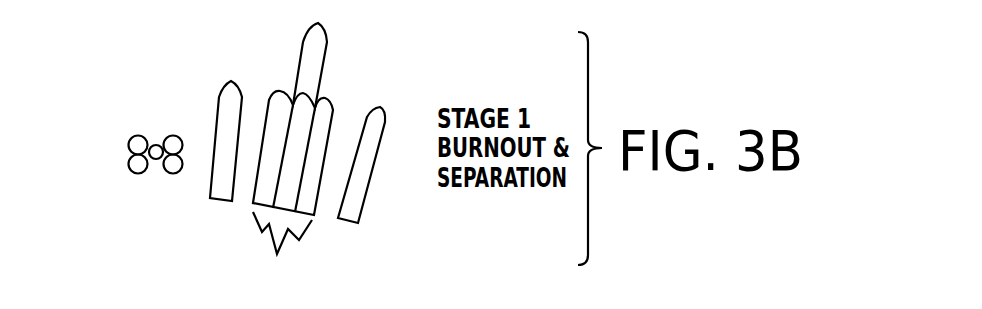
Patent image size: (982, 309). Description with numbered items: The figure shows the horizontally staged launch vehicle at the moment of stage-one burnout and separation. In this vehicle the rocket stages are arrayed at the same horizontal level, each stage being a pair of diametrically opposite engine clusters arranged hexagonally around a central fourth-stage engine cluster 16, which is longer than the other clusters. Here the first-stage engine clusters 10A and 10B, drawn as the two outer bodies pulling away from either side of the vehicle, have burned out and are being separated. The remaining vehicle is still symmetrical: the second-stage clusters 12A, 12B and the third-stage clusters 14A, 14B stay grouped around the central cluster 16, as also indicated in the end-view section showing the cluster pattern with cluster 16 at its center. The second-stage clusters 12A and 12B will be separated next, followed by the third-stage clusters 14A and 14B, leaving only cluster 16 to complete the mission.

The first-stage engine cluster 10A is at (238, 90).
The first-stage engine cluster 10B is at (388, 123).
The second-stage engine cluster 12A is at (129, 160).
The second-stage engine cluster 12B is at (172, 134).
The third-stage engine cluster 14A is at (133, 136).
The third-stage engine cluster 14B is at (170, 173).
The fourth-stage engine cluster 16 is at (156, 159).